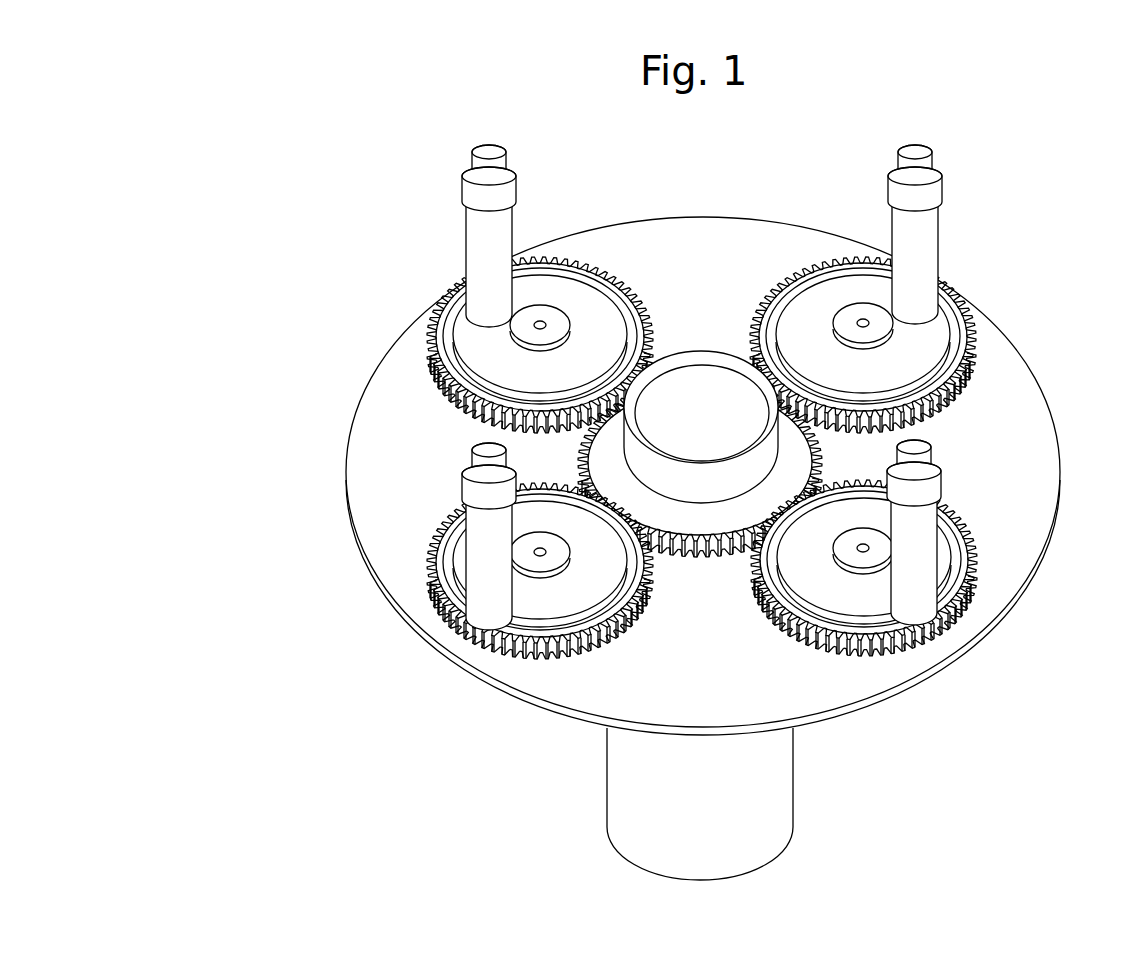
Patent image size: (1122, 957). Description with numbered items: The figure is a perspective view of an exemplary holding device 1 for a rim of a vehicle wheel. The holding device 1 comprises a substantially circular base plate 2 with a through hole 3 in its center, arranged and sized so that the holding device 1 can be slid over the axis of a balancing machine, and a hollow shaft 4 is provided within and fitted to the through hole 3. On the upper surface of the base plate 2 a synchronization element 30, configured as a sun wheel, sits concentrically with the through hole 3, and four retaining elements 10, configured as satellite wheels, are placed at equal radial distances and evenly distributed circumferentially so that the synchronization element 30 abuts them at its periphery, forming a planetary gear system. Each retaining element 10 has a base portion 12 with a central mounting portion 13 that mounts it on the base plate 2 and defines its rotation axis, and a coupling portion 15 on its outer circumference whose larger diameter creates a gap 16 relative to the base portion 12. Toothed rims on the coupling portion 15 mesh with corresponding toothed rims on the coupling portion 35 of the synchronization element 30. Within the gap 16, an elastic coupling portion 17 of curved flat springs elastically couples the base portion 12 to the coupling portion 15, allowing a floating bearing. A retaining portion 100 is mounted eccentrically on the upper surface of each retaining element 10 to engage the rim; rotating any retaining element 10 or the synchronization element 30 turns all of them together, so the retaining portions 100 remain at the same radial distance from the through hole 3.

The holding device 1 is at (263, 591).
The base plate 2 is at (1005, 475).
The through hole 3 is at (697, 442).
The hollow shaft 4 is at (745, 805).
The retaining element 10 is at (485, 335).
The base portion 12 is at (483, 357).
The central mounting portion 13 is at (545, 320).
The coupling portion 15 is at (450, 395).
The gap 16 is at (623, 343).
The elastic coupling portion 17 is at (543, 250).
The synchronization element 30 is at (790, 450).
The coupling portion of the synchronization element 35 is at (815, 458).
The retaining portion 100 is at (484, 240).